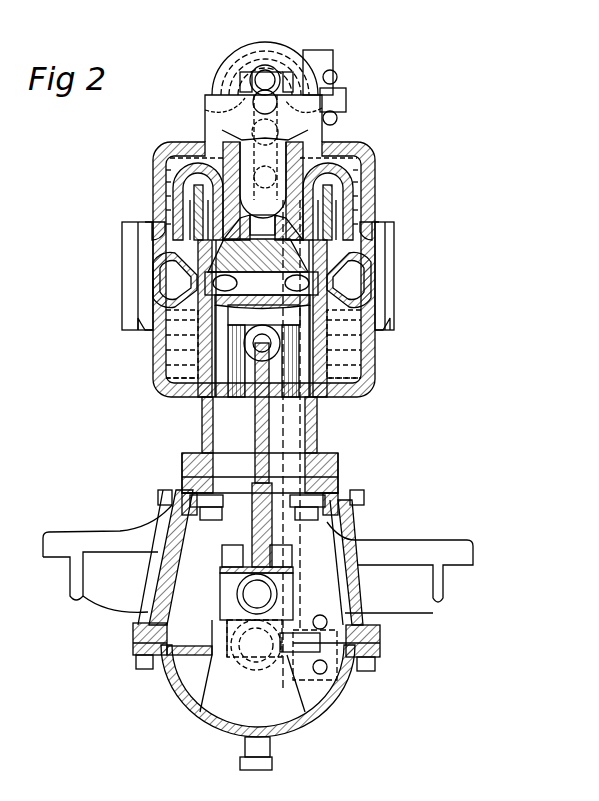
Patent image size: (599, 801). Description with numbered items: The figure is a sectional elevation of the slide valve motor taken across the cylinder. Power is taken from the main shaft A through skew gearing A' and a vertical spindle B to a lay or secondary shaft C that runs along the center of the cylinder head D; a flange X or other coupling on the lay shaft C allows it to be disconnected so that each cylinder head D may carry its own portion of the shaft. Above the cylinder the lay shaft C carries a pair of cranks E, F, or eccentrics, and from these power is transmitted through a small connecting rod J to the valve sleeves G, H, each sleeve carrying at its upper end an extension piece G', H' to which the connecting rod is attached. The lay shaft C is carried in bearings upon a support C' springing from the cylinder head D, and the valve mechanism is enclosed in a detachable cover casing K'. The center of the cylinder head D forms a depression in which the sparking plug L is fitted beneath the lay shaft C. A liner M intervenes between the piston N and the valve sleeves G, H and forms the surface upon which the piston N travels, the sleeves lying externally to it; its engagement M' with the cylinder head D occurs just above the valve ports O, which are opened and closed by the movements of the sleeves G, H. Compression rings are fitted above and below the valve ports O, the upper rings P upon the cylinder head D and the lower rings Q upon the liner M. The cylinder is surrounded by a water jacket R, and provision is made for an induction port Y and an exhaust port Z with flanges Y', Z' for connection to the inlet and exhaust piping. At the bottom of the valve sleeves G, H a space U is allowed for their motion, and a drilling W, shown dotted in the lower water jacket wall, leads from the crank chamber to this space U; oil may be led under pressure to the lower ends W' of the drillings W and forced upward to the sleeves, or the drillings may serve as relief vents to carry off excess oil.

The detachable cover casing K' is at (265, 58).
The flange coupling X is at (263, 81).
The crank F is at (276, 78).
The skew gearing A' is at (279, 402).
The valve connecting rod J is at (338, 100).
The lay or secondary shaft C is at (238, 131).
The support C' is at (250, 114).
The crank E is at (260, 131).
The inner valve sleeve H is at (267, 260).
The outer valve sleeve G is at (240, 201).
The extension piece H' is at (235, 190).
The extension piece G' is at (294, 190).
The cylinder head D is at (263, 180).
The sparking plug L is at (263, 227).
The space U is at (198, 393).
The upper compression rings P is at (262, 279).
The liner engagement M' is at (258, 255).
The valve ports O is at (261, 283).
The piston N is at (262, 346).
The liner M is at (254, 455).
The drilling W is at (260, 445).
The lower ends of drillings W' is at (260, 509).
The induction port Y is at (228, 423).
The inlet flange Y' is at (108, 307).
The exhaust port Z is at (399, 276).
The exhaust flange Z' is at (420, 269).
The water jacket R is at (148, 326).
The lower compression rings Q is at (185, 332).
The vertical spindle B is at (322, 540).
The main shaft A is at (274, 445).